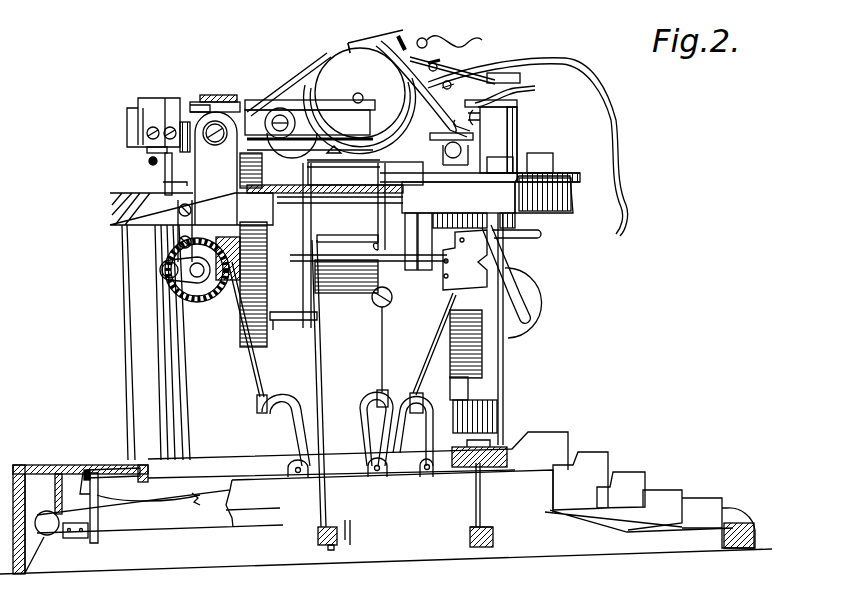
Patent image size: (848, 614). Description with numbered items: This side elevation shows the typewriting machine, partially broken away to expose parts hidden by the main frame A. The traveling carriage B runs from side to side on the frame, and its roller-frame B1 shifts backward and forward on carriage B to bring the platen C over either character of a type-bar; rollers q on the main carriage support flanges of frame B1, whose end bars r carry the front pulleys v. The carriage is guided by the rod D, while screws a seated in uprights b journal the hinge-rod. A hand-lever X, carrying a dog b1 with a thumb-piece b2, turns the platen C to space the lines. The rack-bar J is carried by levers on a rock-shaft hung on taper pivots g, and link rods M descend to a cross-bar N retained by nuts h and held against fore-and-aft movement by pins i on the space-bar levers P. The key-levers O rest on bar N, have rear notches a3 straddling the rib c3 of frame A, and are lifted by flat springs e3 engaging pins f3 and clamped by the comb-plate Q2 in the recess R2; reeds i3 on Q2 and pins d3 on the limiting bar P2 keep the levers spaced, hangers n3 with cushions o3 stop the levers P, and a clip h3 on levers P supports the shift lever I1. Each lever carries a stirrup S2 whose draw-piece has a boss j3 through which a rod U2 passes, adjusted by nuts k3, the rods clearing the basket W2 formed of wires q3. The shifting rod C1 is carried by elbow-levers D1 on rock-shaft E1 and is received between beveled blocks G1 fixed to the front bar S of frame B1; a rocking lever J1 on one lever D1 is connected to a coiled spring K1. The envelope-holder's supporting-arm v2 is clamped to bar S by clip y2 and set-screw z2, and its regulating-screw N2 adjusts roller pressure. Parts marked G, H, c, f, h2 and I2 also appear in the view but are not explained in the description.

The rib c3 is at (55, 497).
The levers P is at (163, 524).
The semi-circular notch a3 is at (60, 535).
The clip h3 is at (72, 540).
The pins or reeds i3 is at (96, 545).
The comb-plate Q2 is at (106, 472).
The recess R2 is at (90, 470).
The flat springs e3 is at (148, 492).
The pin or screw f3 is at (187, 491).
The key-lever O is at (389, 491).
The strap or stirrup S2 is at (425, 528).
The link or wire rod M is at (322, 395).
The cross-bar N is at (318, 536).
The pins i is at (352, 538).
The nut h is at (334, 548).
The wires or pins d3 is at (482, 498).
The cushion o3 is at (491, 540).
The hook-shaped hanger n3 is at (493, 525).
The bar P2 is at (466, 467).
The arch lever I2 is at (332, 429).
The finger key or lever I1 is at (445, 421).
The nuts k3 is at (283, 392).
The tubular boss or block j3 is at (345, 357).
The wire or rod U2 is at (256, 329).
The supporting-arm v2 is at (375, 35).
The main frame A is at (341, 205).
The taper pivots g is at (172, 243).
The rock-shaft E1 is at (295, 293).
The wires q3 is at (284, 325).
The uprights b is at (216, 168).
The screws a is at (216, 145).
The block G is at (158, 125).
The bracket H is at (147, 150).
The rack-bar J is at (154, 166).
The block c is at (213, 95).
The roller-frame or shifting supplemental carriage B1 is at (310, 99).
The main carriage B is at (312, 138).
The rollers q is at (291, 123).
The end bars r is at (344, 96).
The pulleys v is at (290, 157).
The roller or platen C is at (360, 101).
The dog b1 is at (339, 43).
The regulating-screw N2 is at (402, 35).
The thumb-piece or extension b2 is at (457, 37).
The hand-lever X is at (635, 133).
The set-screw z2 is at (440, 68).
The lever or clip y2 is at (458, 84).
The bracket f is at (492, 92).
The rod or bar D is at (480, 141).
The front bar S is at (460, 129).
The shifting bar or rod C1 is at (448, 153).
The beveled blocks G1 is at (460, 153).
The elbow-levers D1 is at (460, 170).
The basket or guard W2 is at (340, 310).
The bracket h2 is at (476, 238).
The rocking lever J1 is at (512, 281).
The coiled spring K1 is at (481, 360).